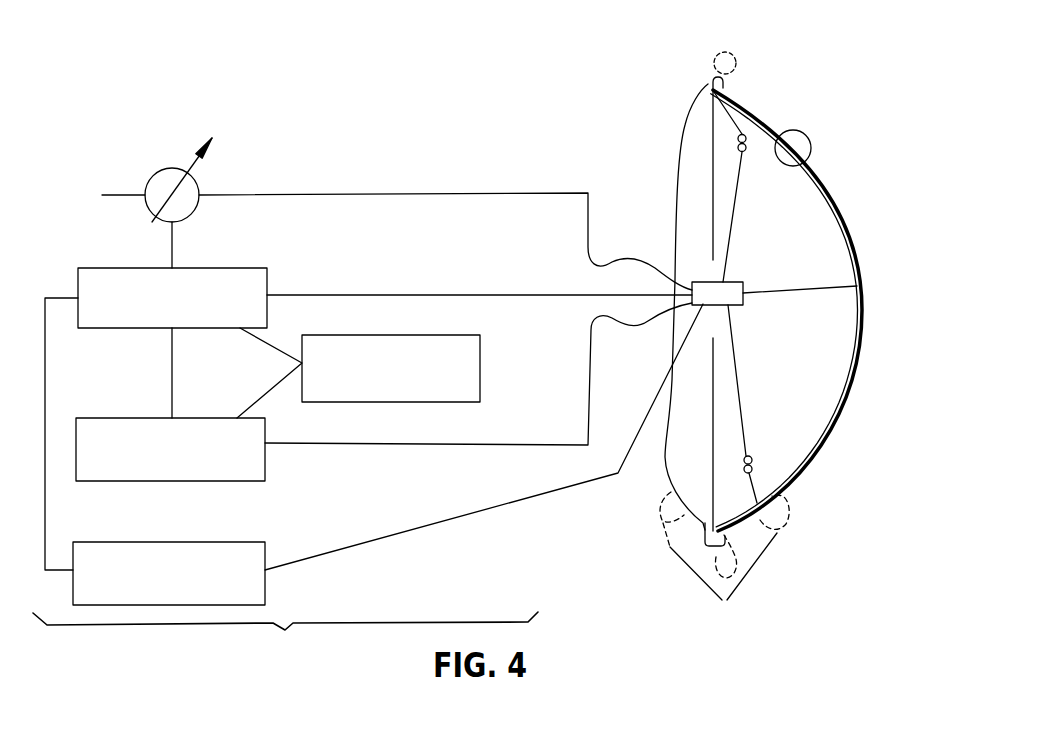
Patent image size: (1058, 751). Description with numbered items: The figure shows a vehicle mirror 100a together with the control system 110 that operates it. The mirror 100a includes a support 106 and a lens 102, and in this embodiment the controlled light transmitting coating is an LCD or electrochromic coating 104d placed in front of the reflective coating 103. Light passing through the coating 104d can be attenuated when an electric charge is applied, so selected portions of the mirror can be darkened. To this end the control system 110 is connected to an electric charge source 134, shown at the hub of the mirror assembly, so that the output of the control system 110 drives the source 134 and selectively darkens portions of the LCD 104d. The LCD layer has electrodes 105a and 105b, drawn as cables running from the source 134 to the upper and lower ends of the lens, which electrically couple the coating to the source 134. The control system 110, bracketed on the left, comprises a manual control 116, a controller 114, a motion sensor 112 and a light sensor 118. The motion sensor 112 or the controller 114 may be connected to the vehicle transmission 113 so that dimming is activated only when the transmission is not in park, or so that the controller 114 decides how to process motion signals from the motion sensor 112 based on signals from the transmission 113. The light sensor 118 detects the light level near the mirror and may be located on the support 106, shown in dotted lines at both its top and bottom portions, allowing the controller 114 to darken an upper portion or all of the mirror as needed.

The mirror 100a is at (848, 593).
The lens 102 is at (804, 310).
The reflective surface 103 is at (863, 160).
The LCD/electrochromic coating 104d is at (784, 310).
The electrode 105a is at (753, 478).
The electrode 105b is at (748, 127).
The support 106 is at (683, 147).
The control system 110 is at (451, 357).
The motion sensor 112 is at (127, 418).
The transmission 113 is at (483, 373).
The controller 114 is at (215, 262).
The manual control 116 is at (148, 175).
The light sensor 118 is at (145, 547).
The electric charge source 134 is at (735, 307).